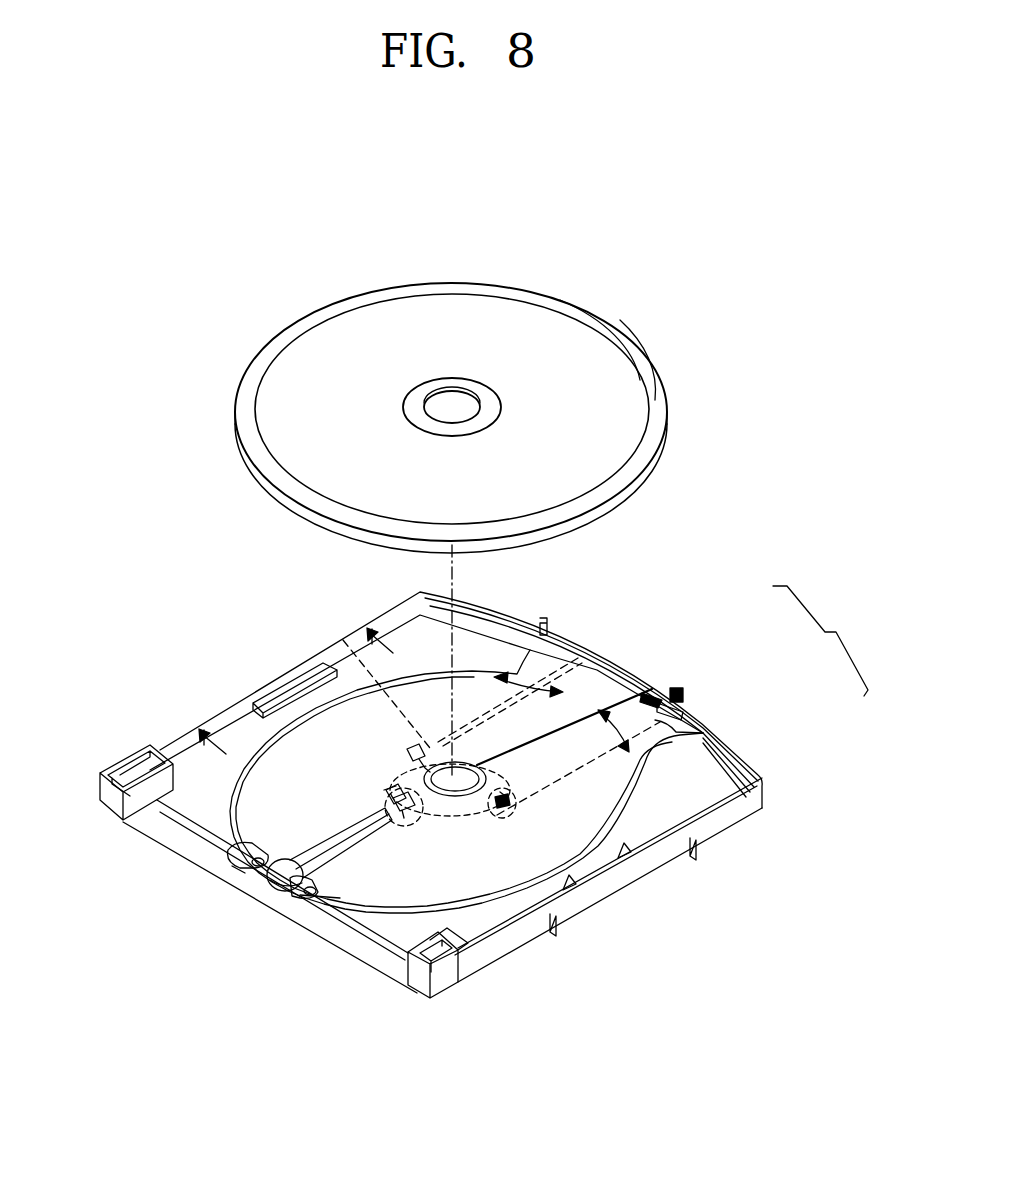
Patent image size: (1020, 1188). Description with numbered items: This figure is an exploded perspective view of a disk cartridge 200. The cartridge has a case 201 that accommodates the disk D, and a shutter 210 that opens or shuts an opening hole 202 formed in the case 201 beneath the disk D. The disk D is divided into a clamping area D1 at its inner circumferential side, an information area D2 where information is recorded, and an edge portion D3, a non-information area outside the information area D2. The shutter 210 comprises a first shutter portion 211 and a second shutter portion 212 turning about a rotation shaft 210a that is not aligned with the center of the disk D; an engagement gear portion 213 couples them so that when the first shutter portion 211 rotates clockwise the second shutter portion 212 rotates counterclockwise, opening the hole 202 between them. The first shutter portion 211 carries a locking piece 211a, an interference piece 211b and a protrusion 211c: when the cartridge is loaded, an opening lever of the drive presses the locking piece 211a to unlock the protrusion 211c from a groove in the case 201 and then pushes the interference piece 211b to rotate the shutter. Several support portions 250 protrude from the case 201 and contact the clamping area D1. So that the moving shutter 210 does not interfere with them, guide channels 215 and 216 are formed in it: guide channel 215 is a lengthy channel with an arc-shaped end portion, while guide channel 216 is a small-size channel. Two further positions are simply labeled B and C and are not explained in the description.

The disk D is at (277, 305).
The clamping area D1 is at (469, 385).
The information area D2 is at (608, 354).
The edge portion D3 is at (650, 368).
The disk cartridge 200 is at (486, 730).
The case 201 is at (665, 870).
The opening hole 202 is at (378, 650).
The shutter 210 is at (649, 691).
The rotation shaft 210a is at (648, 694).
The first shutter portion 211 is at (623, 763).
The locking piece 211a is at (688, 707).
The interference piece 211b is at (706, 725).
The protrusion 211c is at (683, 692).
The second shutter portion 212 is at (597, 652).
The engagement gear portion 213 is at (272, 853).
The guide channel 215 is at (433, 757).
The guide channel 216 is at (392, 802).
The support portions 250 is at (412, 745).
The position B is at (510, 790).
The position C is at (378, 796).